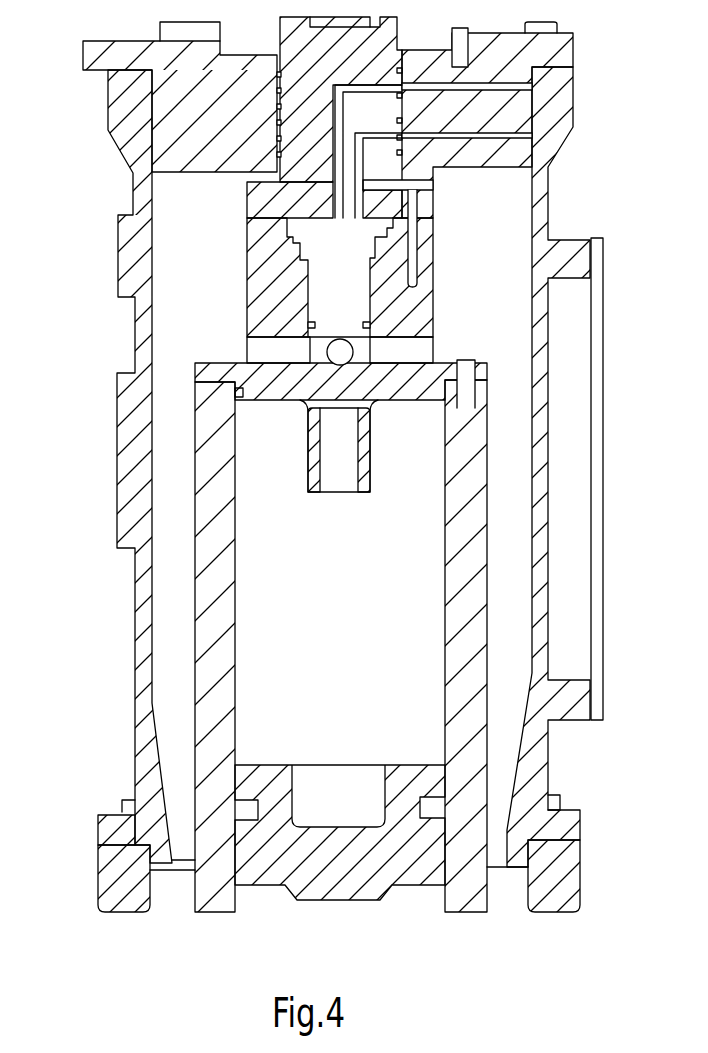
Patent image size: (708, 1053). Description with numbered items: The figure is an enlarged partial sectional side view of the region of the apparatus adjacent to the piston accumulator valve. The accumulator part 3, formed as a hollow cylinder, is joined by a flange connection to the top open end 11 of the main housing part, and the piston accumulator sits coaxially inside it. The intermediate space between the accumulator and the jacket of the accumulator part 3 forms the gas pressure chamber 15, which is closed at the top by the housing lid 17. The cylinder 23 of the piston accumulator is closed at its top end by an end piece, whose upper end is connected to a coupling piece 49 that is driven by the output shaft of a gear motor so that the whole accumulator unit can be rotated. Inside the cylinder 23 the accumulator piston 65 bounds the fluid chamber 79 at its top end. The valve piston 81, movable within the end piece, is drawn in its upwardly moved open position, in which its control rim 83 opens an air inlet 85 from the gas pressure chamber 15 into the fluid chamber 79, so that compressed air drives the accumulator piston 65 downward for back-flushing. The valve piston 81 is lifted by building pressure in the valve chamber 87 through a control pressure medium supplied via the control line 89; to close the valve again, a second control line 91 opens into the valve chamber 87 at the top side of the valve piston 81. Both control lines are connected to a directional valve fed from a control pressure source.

The accumulator part 3 is at (116, 587).
The top open end 11 is at (558, 848).
The gas pressure chamber 15 is at (193, 332).
The housing lid 17 is at (184, 119).
The cylinder 23 is at (210, 645).
The coupling piece 49 is at (302, 124).
The accumulator piston 65 is at (265, 788).
The fluid chamber 79 is at (400, 523).
The valve piston 81 is at (327, 287).
The control rim 83 is at (372, 357).
The air inlet 85 is at (304, 362).
The valve chamber 87 is at (298, 276).
The control line 89 is at (512, 140).
The second control line 91 is at (540, 93).